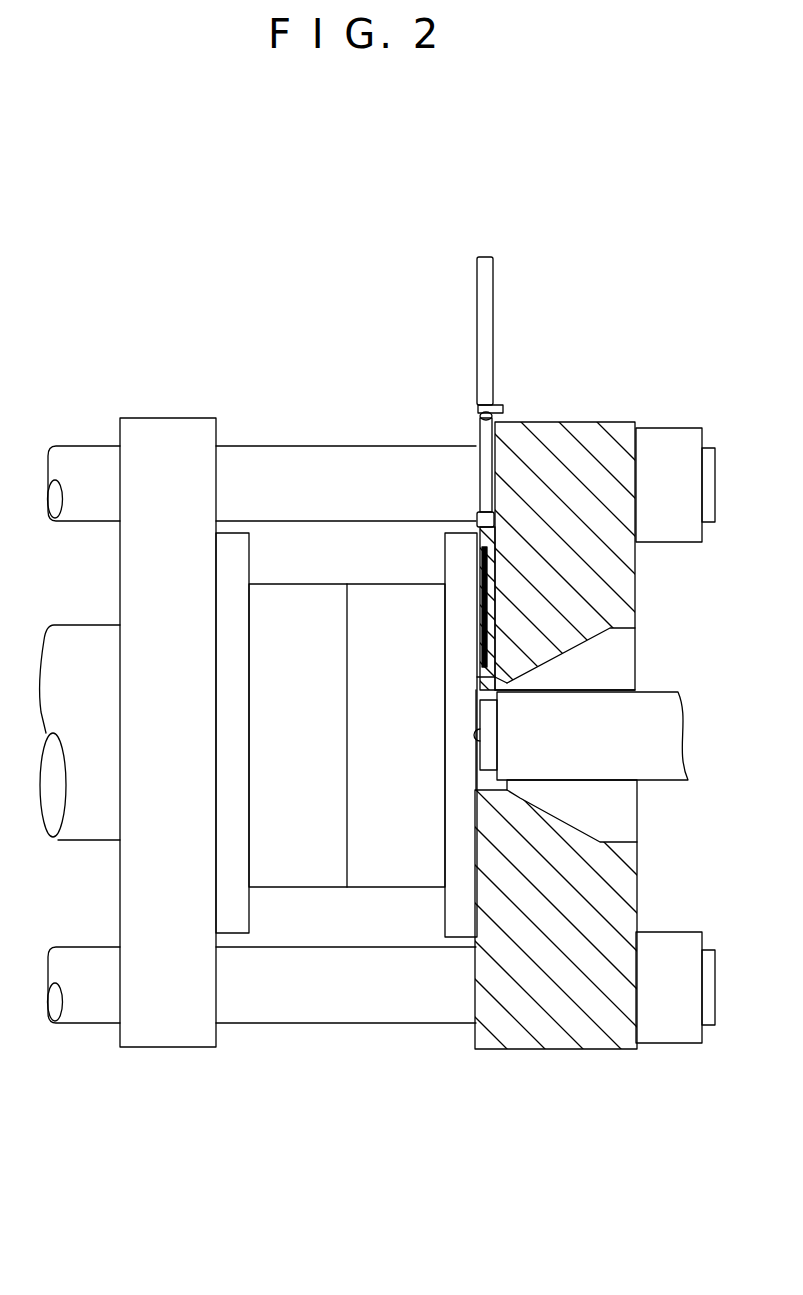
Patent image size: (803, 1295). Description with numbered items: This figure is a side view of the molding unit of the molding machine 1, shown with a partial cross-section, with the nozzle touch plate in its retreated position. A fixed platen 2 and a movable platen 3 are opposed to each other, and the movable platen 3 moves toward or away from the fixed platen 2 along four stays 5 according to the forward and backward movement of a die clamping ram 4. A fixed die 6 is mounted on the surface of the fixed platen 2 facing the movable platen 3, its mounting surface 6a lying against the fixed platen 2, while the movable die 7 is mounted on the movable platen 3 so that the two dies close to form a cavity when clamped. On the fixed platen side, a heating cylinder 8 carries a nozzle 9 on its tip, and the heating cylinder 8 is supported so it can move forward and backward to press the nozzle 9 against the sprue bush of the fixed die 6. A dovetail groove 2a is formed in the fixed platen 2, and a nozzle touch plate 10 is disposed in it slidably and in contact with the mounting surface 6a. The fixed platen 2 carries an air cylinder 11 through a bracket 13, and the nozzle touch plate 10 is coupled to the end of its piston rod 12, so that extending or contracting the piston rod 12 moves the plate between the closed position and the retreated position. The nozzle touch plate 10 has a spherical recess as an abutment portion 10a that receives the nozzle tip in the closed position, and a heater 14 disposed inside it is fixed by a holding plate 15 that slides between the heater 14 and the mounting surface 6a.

The molding machine 1 is at (276, 416).
The fixed platen 2 is at (506, 757).
The dovetail groove 2a is at (497, 470).
The movable platen 3 is at (165, 1032).
The die clamping ram 4 is at (85, 832).
The stays 5 is at (337, 1013).
The fixed die 6 is at (395, 870).
The mounting surface 6a is at (478, 893).
The movable die 7 is at (292, 900).
The heating cylinder 8 is at (645, 762).
The nozzle 9 is at (481, 733).
The nozzle touch plate 10 is at (495, 580).
The abutment portion 10a is at (500, 640).
The air cylinder 11 is at (483, 288).
The piston rod 12 is at (485, 438).
The bracket 13 is at (500, 406).
The heater 14 is at (488, 560).
The holding plate 15 is at (478, 557).